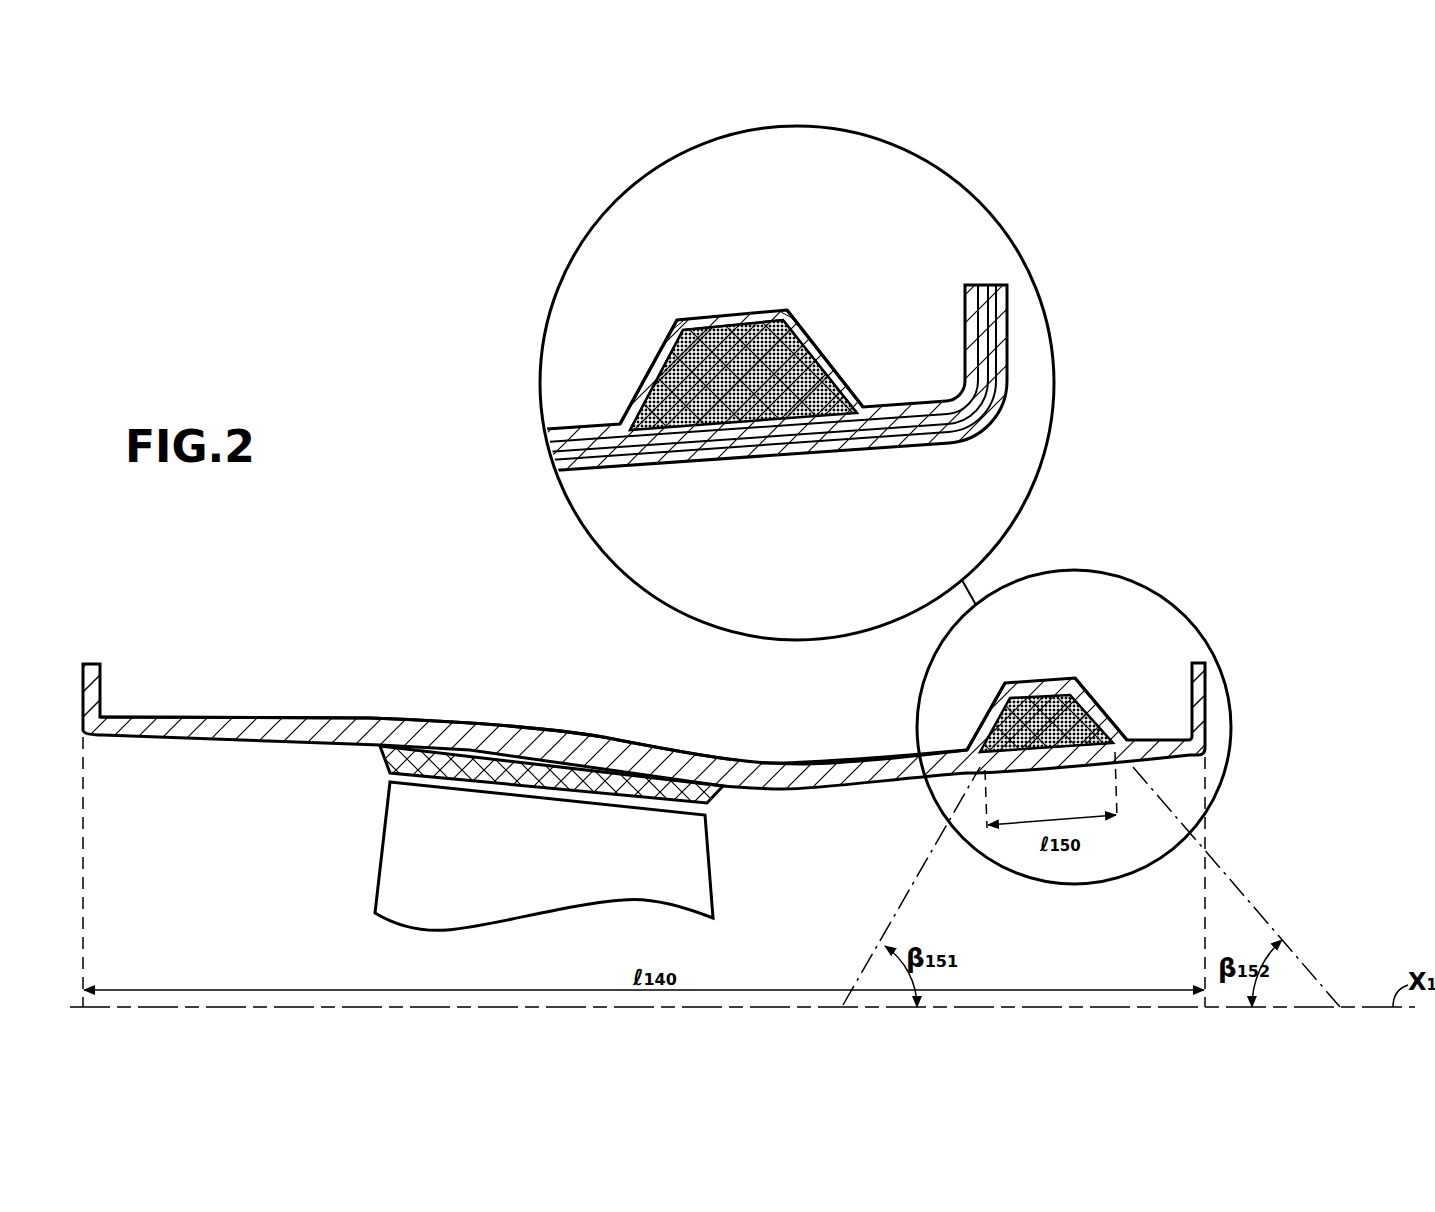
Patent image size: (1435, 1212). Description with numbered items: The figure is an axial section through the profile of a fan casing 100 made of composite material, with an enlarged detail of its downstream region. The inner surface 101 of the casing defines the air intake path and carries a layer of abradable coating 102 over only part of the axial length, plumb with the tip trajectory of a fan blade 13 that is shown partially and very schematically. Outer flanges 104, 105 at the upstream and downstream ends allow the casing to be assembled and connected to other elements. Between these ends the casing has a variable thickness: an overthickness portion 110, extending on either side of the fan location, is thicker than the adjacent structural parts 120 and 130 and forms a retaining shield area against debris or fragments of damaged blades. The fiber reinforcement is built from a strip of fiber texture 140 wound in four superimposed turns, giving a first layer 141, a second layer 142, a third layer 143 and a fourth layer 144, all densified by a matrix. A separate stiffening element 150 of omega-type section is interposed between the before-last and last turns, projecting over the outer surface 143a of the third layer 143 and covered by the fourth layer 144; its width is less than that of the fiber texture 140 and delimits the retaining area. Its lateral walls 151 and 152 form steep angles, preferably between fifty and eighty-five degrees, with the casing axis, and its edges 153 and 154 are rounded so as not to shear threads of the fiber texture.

The blade 13 is at (698, 861).
The fan casing 100 is at (318, 666).
The inner surface 101 is at (216, 737).
The layer of abradable coating 102 is at (383, 760).
The outer flange 104 is at (95, 690).
The outer flange 105 is at (1200, 698).
The overthickness portion 110 is at (520, 740).
The structural part 120 is at (207, 717).
The structural part 130 is at (856, 757).
The fiber texture 140 is at (748, 392).
The first layer 141 is at (637, 458).
The second layer 142 is at (557, 452).
The third layer 143 is at (555, 442).
The outer surface 143a is at (835, 410).
The fourth layer 144 is at (643, 380).
The stiffening element 150 is at (1038, 690).
The lateral wall 151 is at (987, 720).
The lateral wall 152 is at (1098, 720).
The rounded edge 153 is at (677, 320).
The rounded edge 154 is at (787, 312).